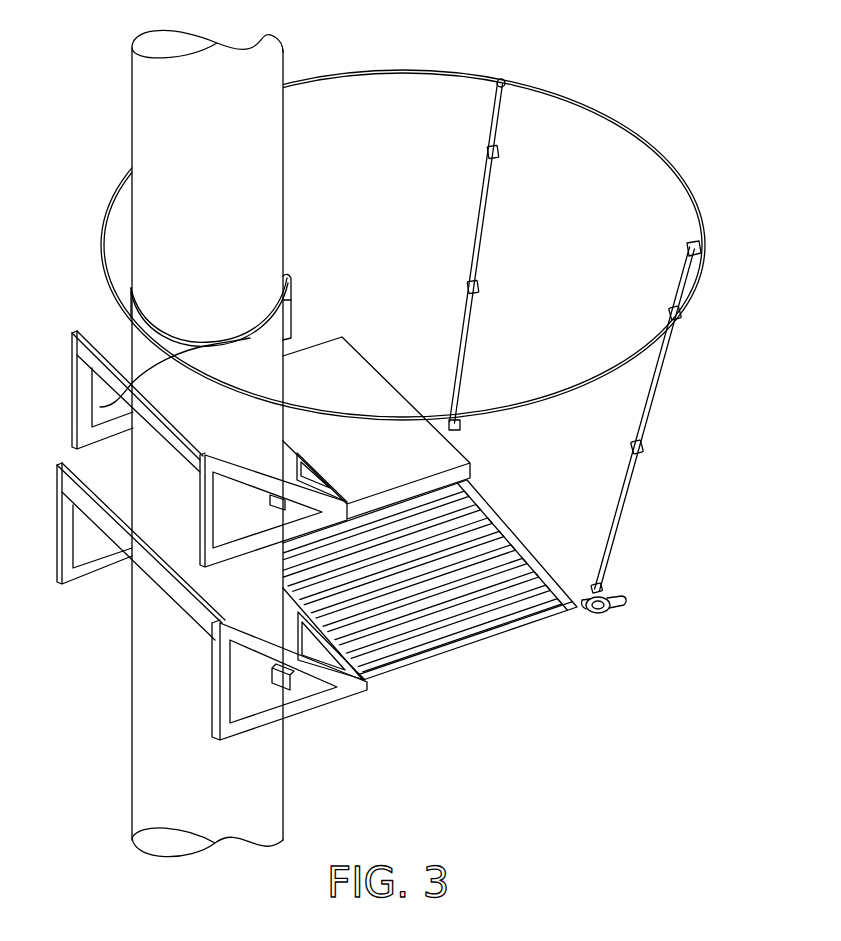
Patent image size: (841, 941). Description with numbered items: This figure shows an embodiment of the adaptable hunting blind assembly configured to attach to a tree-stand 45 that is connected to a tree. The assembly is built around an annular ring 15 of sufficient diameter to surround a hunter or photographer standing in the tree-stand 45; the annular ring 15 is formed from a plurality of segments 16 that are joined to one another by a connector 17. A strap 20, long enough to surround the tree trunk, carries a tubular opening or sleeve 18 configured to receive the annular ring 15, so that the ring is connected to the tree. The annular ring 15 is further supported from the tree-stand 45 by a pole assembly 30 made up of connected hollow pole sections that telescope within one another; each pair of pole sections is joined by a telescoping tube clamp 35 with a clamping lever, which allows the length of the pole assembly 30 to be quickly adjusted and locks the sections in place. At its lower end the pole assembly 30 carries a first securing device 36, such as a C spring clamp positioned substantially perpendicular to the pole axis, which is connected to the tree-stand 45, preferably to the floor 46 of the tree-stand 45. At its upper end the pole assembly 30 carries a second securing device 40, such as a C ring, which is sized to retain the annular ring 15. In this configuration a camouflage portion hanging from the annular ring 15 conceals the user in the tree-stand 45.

The annular ring 15 is at (657, 150).
The segments 16 is at (515, 72).
The connector 17 is at (107, 212).
The sleeve 18 is at (131, 332).
The strap 20 is at (291, 333).
The pole assembly 30 is at (647, 412).
The telescoping tube clamp 35 is at (674, 308).
The first securing device 36 is at (622, 604).
The second securing device 40 is at (700, 252).
The tree-stand 45 is at (362, 378).
The floor 46 is at (530, 632).